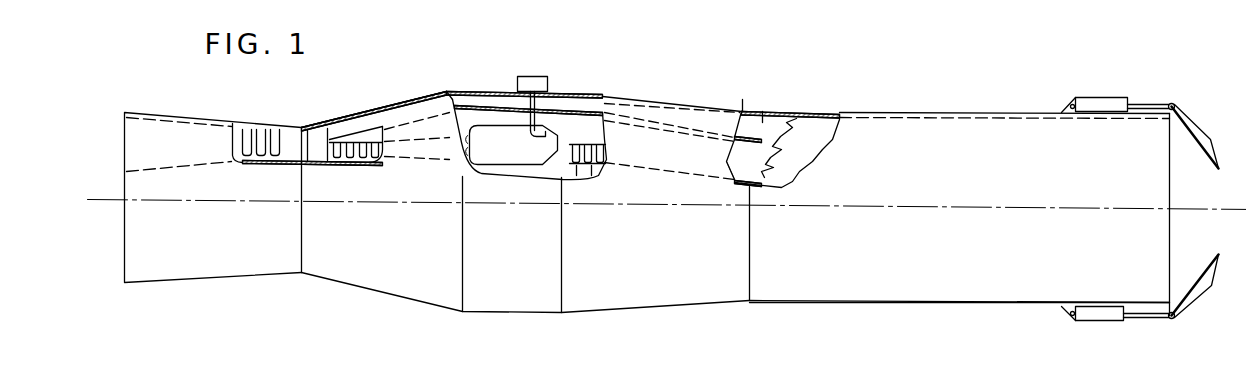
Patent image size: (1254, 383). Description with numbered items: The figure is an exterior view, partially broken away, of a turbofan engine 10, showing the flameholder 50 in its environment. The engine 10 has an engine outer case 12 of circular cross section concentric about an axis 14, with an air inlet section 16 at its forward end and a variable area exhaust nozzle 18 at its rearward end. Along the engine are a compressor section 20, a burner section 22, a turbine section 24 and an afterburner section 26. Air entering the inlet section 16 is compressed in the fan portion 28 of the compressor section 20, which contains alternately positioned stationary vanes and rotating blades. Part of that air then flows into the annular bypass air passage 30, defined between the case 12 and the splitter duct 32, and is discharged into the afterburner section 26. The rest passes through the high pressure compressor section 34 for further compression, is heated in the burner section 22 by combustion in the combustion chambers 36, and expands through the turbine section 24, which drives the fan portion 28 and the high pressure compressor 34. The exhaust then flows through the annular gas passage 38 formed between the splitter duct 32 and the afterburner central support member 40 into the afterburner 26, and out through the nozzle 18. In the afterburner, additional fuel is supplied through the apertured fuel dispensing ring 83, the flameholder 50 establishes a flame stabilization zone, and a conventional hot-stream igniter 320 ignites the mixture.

The engine 10 is at (784, 82).
The engine outer case 12 is at (572, 96).
The axis 14 is at (862, 204).
The air inlet section 16 is at (124, 127).
The variable area exhaust nozzle 18 is at (1199, 134).
The compressor section 20 is at (240, 198).
The burner section 22 is at (513, 204).
The turbine section 24 is at (594, 202).
The afterburner section 26 is at (1034, 195).
The fan portion 28 is at (257, 132).
The annular bypass air passage 30 is at (415, 100).
The splitter duct 32 is at (465, 97).
The high pressure compressor section 34 is at (353, 138).
The combustion chambers 36 is at (510, 161).
The annular gas passage 38 is at (737, 170).
The afterburner central support member 40 is at (736, 183).
The flameholder 50 is at (797, 142).
The fuel dispensing ring 83 is at (757, 175).
The hot-stream igniter 320 is at (537, 80).